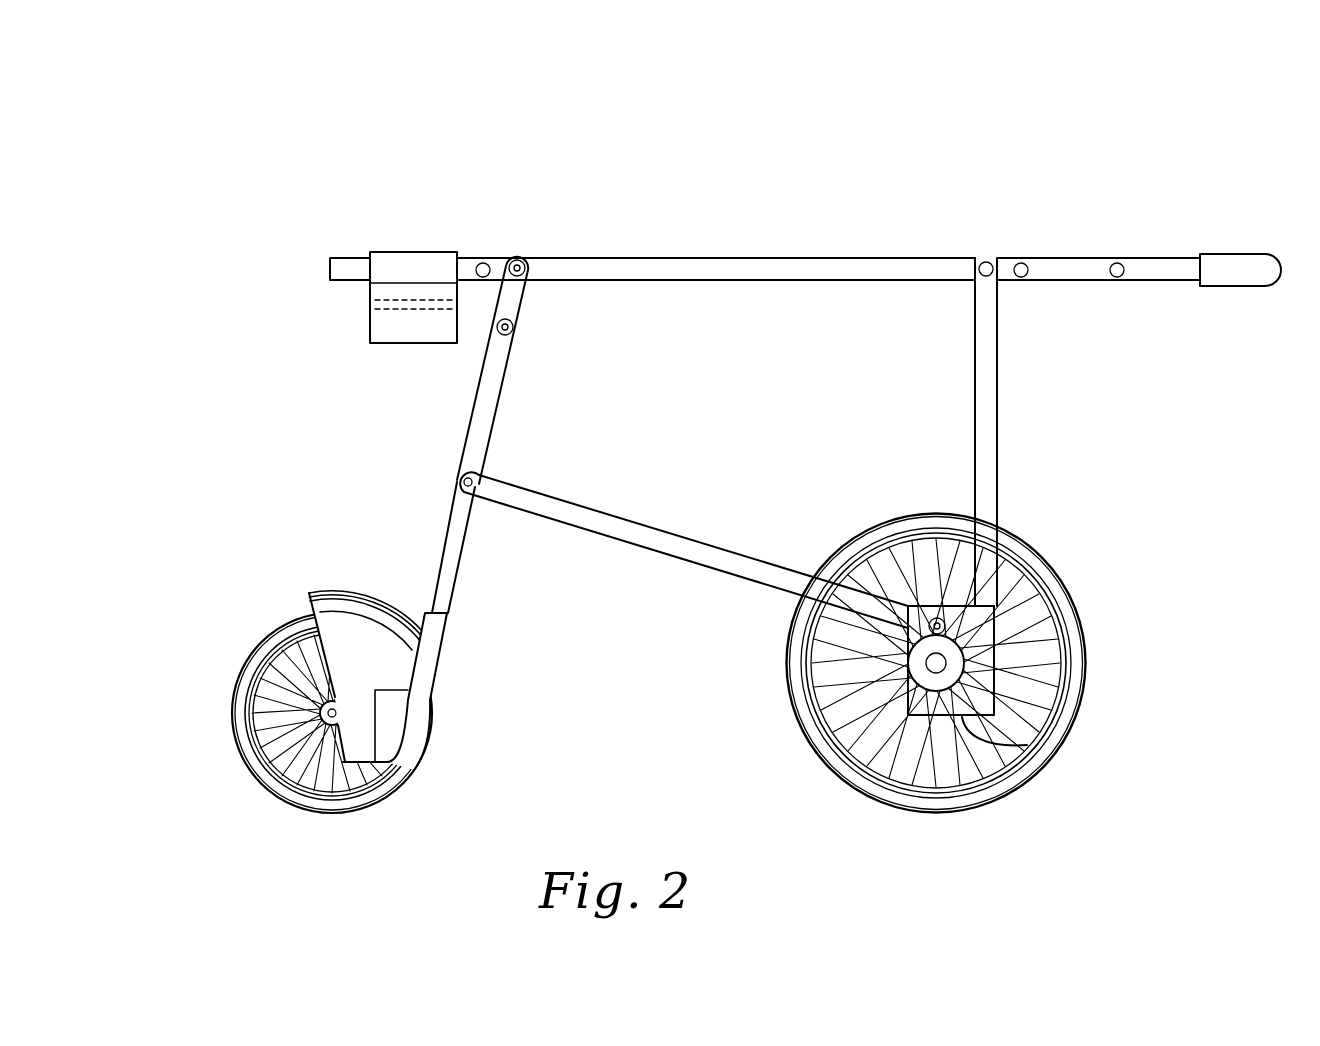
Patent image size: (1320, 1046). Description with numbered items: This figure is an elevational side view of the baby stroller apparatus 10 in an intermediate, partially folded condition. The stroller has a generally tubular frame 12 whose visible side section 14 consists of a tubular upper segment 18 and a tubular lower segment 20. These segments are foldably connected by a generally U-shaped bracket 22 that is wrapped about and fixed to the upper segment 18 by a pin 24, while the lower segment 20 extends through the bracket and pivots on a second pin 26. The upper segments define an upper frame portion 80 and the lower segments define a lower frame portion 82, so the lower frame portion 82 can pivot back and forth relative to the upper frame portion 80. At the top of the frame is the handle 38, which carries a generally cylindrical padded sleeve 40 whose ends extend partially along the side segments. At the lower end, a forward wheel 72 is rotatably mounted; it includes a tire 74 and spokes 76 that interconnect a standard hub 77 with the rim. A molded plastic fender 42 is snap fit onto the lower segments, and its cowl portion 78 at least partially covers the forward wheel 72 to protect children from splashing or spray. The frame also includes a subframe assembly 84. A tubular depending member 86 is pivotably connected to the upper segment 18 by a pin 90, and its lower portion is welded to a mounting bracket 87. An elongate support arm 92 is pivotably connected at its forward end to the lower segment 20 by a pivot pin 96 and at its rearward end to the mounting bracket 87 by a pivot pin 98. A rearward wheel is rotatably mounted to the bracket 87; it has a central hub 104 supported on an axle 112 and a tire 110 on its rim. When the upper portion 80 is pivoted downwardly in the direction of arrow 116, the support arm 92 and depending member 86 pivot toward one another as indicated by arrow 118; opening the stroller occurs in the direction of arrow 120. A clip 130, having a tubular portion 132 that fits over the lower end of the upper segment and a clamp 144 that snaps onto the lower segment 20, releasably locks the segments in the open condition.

The baby stroller apparatus 10 is at (362, 152).
The frame 12 is at (765, 252).
The side section 14 is at (765, 258).
The upper segment 18 is at (862, 258).
The lower segment 20 is at (497, 471).
The U-shaped bracket 22 is at (522, 266).
The pin 24 is at (517, 260).
The second pin 26 is at (514, 328).
The handle 38 is at (1248, 253).
The padded sleeve 40 is at (1237, 286).
The fender 42 is at (337, 632).
The forward wheel 72 is at (248, 672).
The tire 74 is at (304, 687).
The spokes 76 is at (322, 717).
The hub 77 is at (316, 726).
The cowl portion 78 is at (382, 596).
The upper frame portion 80 is at (930, 282).
The lower frame portion 82 is at (500, 378).
The subframe assembly 84 is at (684, 551).
The depending member 86 is at (998, 400).
The mounting bracket 87 is at (946, 663).
The pin 90 is at (985, 262).
The support arm 92 is at (688, 528).
The pivot pin 96 is at (474, 482).
The pivot pin 98 is at (937, 620).
The central hub 104 is at (908, 662).
The tire 110 is at (893, 663).
The axle 112 is at (995, 676).
The arrow 116 is at (1138, 425).
The arrow 118 is at (743, 395).
The arrow 120 is at (1078, 172).
The clip 130 is at (370, 302).
The tubular portion 132 is at (360, 303).
The clamp 144 is at (405, 343).